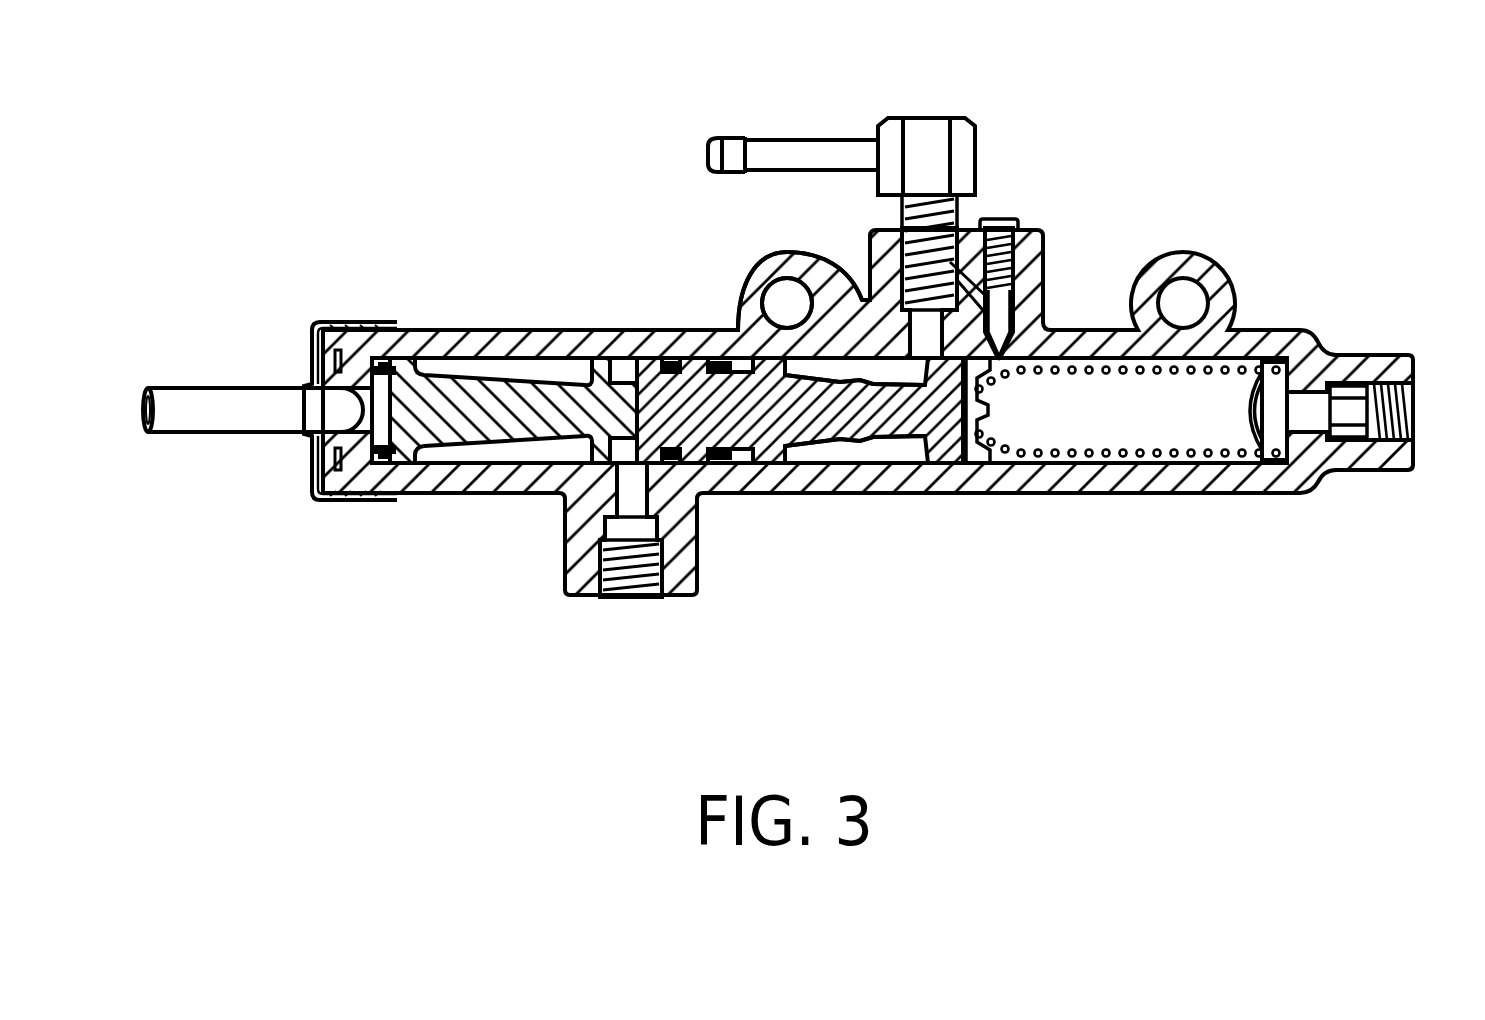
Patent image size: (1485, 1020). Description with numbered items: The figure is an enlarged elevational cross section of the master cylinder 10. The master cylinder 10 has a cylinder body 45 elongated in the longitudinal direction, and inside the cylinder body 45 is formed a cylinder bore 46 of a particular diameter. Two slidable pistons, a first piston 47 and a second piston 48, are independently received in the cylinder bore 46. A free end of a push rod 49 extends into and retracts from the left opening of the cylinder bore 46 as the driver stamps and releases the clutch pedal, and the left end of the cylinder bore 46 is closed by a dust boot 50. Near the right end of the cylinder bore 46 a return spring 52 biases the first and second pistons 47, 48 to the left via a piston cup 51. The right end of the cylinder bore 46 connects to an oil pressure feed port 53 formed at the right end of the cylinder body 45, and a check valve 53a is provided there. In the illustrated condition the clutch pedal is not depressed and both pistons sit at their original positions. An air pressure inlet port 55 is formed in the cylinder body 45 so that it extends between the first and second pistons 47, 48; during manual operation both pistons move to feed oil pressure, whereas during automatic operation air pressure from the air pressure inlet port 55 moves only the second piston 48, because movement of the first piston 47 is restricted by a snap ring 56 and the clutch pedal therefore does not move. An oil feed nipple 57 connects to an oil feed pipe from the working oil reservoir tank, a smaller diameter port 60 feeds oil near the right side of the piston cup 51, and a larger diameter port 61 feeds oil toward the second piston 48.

The master cylinder 10 is at (540, 188).
The cylinder body 45 is at (728, 270).
The cylinder bore 46 is at (883, 460).
The first piston 47 is at (495, 400).
The second piston 48 is at (805, 420).
The push rod 49 is at (213, 403).
The dust boot 50 is at (308, 464).
The piston cup 51 is at (977, 464).
The return spring 52 is at (1078, 460).
The oil pressure feed port 53 is at (1411, 418).
The check valve 53a is at (1278, 417).
The air pressure inlet port 55 is at (633, 572).
The snap ring 56 is at (330, 366).
The oil feed nipple 57 is at (929, 134).
The smaller diameter port 60 is at (1043, 326).
The larger diameter port 61 is at (900, 330).